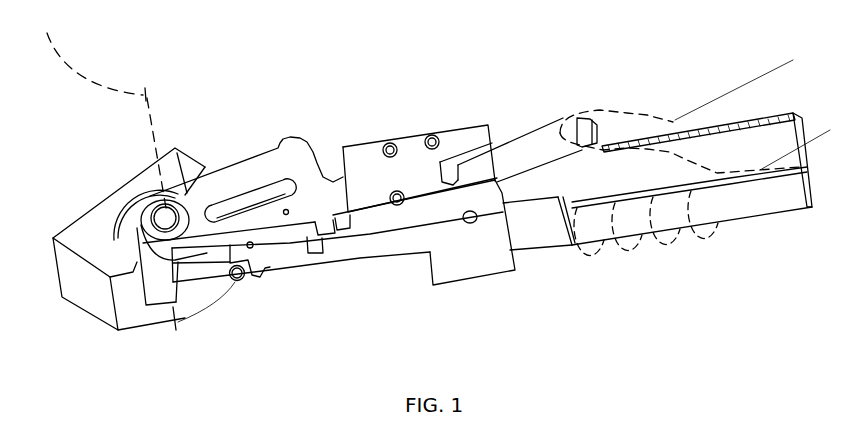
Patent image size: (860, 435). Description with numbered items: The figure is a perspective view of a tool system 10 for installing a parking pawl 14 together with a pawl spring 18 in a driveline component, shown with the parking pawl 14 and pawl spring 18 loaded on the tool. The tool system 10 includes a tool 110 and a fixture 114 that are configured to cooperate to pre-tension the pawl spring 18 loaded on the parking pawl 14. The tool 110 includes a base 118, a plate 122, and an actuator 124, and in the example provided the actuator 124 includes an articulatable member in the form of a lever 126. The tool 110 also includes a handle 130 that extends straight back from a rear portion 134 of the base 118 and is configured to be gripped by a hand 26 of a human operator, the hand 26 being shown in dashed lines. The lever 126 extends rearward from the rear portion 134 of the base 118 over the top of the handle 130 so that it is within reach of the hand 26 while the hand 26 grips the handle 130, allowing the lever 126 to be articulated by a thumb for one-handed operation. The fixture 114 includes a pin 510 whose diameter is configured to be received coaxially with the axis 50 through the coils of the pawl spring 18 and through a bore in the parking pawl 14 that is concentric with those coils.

The tool system 10 is at (182, 63).
The parking pawl 14 is at (297, 155).
The pawl spring 18 is at (152, 210).
The hand 26 is at (668, 122).
The axis 50 is at (90, 109).
The tool 110 is at (370, 138).
The fixture 114 is at (130, 333).
The base 118 is at (388, 248).
The plate 122 is at (187, 280).
The actuator 124 is at (535, 123).
The lever 126 is at (522, 147).
The handle 130 is at (760, 203).
The rear portion 134 is at (522, 268).
The pin 510 is at (172, 220).